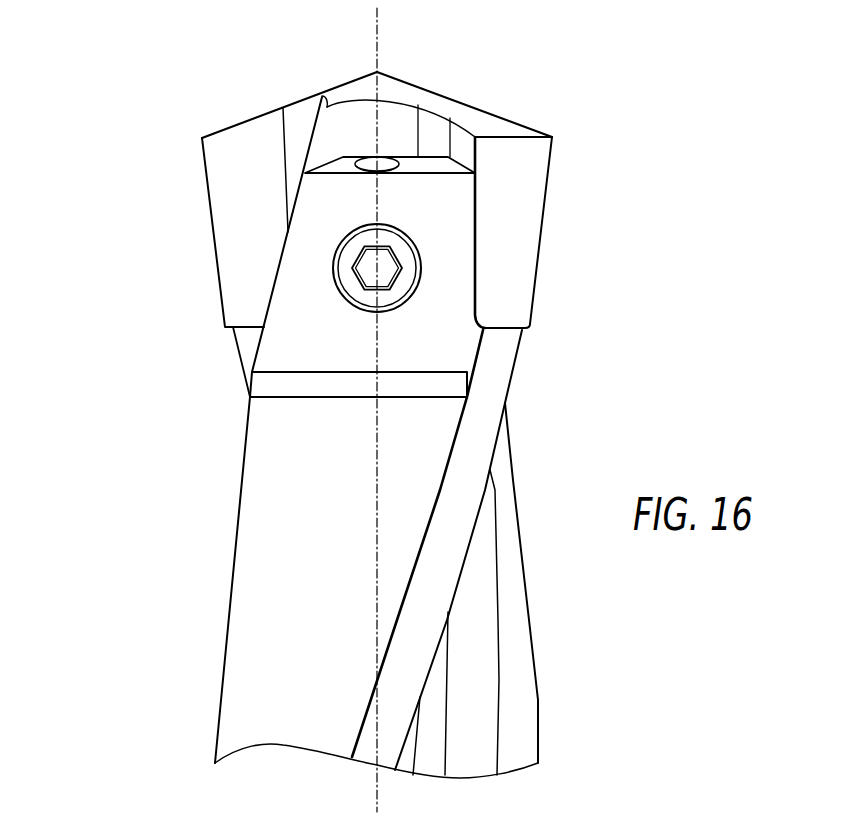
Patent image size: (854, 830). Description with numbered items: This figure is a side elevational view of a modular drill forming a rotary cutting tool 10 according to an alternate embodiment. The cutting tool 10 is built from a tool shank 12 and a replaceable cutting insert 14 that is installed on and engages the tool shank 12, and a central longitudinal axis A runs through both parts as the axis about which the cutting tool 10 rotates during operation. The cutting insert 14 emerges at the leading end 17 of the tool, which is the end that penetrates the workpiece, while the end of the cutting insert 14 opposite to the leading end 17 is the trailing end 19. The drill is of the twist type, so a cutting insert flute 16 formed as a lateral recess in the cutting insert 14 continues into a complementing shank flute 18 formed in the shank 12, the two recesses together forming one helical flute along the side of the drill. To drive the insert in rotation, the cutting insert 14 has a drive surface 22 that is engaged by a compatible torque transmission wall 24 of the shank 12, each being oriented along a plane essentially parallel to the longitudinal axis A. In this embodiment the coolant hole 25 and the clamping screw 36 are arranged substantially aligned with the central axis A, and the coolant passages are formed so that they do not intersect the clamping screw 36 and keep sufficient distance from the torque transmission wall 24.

The rotary cutting tool 10 is at (66, 98).
The tool shank 12 is at (198, 685).
The cutting insert 14 is at (182, 152).
The cutting insert flute 16 is at (232, 200).
The leading end 17 is at (367, 66).
The shank flute 18 is at (476, 690).
The trailing end 19 is at (247, 337).
The drive surface 22 is at (468, 148).
The torque transmission wall 24 is at (478, 228).
The coolant hole 25 is at (390, 166).
The clamping screw 36 is at (392, 298).
The central longitudinal axis A is at (380, 28).